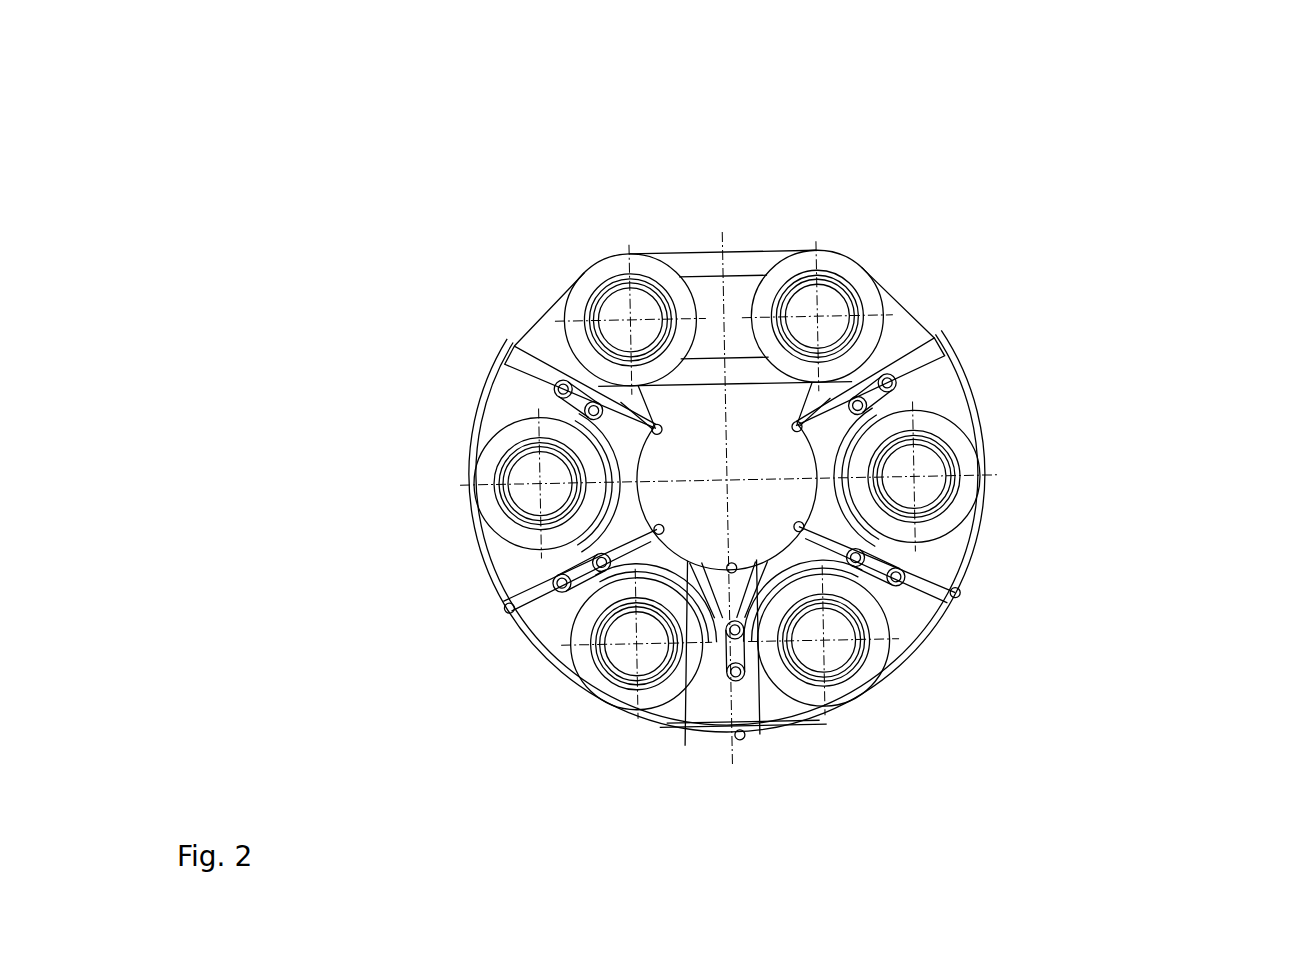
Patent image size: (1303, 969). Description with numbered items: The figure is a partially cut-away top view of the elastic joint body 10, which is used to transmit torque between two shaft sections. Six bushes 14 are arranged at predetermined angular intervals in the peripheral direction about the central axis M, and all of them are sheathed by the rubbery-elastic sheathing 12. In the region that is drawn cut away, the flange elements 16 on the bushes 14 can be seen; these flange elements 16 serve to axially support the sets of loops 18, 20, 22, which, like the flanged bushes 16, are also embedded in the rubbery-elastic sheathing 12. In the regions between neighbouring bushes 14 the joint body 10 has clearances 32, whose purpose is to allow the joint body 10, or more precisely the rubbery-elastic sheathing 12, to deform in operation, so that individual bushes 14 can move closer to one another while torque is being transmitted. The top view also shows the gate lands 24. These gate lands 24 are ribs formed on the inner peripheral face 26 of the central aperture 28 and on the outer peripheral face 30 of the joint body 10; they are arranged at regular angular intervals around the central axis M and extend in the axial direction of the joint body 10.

The elastic joint body 10 is at (1105, 152).
The rubbery-elastic sheathing 12 is at (968, 537).
The bushes 14 is at (870, 282).
The flange elements 16 is at (612, 270).
The set of loops 18 is at (555, 335).
The set of loops 20 is at (742, 253).
The set of loops 22 is at (908, 340).
The gate lands 24 is at (890, 380).
The inner peripheral face 26 is at (755, 735).
The central aperture 28 is at (735, 651).
The outer peripheral face 30 is at (545, 660).
The clearances 32 is at (540, 357).